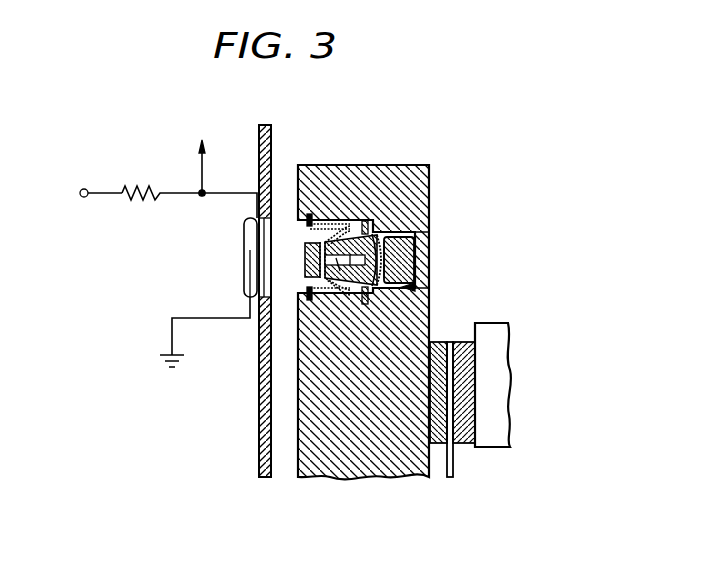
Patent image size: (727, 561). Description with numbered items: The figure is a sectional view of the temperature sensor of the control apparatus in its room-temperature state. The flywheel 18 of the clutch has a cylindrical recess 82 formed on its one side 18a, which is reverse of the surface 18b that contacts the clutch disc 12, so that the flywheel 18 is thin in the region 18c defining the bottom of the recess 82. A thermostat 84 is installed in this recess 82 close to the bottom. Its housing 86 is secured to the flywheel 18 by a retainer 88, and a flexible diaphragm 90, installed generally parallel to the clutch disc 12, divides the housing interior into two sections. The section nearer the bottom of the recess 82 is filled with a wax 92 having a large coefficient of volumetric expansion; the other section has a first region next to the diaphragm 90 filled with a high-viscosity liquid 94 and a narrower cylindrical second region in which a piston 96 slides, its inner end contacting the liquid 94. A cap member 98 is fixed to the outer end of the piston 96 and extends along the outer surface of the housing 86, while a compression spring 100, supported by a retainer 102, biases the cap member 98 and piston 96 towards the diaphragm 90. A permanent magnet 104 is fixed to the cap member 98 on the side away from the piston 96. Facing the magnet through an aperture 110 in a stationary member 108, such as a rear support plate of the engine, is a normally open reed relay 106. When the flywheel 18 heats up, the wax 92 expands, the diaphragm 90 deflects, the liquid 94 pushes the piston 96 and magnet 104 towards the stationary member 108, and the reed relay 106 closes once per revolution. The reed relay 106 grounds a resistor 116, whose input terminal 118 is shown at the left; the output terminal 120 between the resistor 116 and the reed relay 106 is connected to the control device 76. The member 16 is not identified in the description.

The clutch disc 12 is at (437, 446).
The support member 16 is at (486, 448).
The flywheel 18 is at (383, 462).
The one side of flywheel 18a is at (298, 432).
The surface subject to contact with clutch disc 18b is at (432, 322).
The region defining bottom of recess 18c is at (421, 276).
The control device 76 is at (208, 152).
The recess 82 is at (414, 240).
The thermostat 84 is at (418, 289).
The housing 86 is at (384, 234).
The retainer 88 is at (366, 222).
The flexible diaphragm 90 is at (422, 262).
The wax 92 is at (382, 255).
The liquid 94 is at (374, 233).
The piston 96 is at (337, 292).
The cap member 98 is at (347, 229).
The compression spring 100 is at (316, 225).
The retainer 102 is at (307, 300).
The permanent magnet 104 is at (303, 250).
The reed relay 106 is at (244, 252).
The stationary member 108 is at (259, 390).
The aperture 110 is at (262, 280).
The resistor 116 is at (132, 203).
The input terminal 118 is at (82, 195).
The output terminal 120 is at (202, 188).